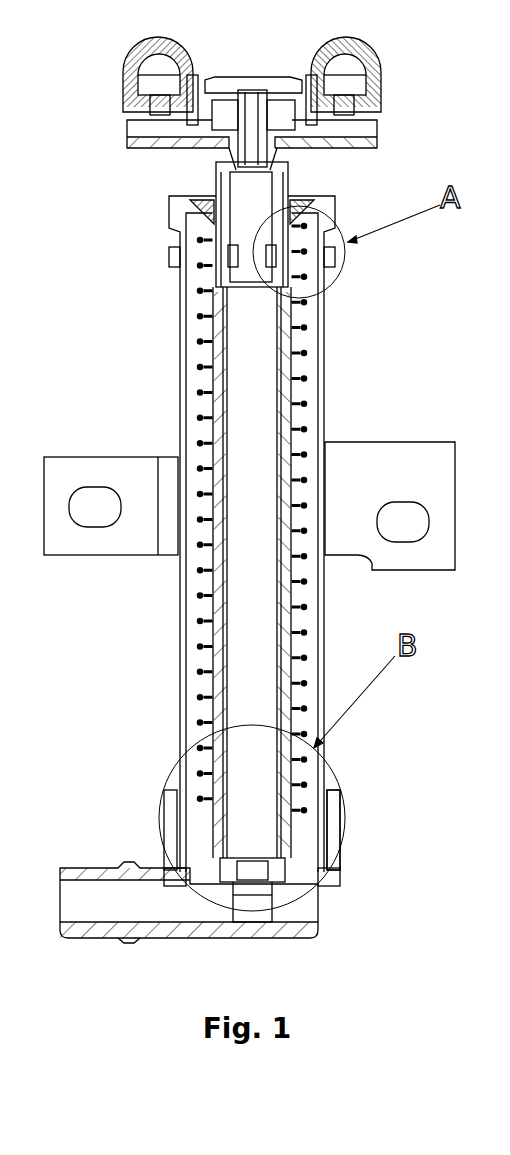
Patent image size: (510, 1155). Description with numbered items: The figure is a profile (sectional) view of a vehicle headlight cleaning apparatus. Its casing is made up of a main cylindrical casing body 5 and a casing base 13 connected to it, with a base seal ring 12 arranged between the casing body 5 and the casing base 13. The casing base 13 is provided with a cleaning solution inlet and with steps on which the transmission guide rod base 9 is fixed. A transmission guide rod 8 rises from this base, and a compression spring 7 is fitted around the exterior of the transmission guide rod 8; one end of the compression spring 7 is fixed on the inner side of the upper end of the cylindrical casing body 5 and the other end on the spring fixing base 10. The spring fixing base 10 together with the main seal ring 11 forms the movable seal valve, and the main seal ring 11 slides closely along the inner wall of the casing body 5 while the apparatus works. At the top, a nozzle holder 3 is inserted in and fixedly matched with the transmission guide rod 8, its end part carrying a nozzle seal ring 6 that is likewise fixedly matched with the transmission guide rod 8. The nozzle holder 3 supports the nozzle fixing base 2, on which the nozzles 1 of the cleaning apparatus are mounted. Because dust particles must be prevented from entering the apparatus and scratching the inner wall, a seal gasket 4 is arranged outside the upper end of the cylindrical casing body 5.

The nozzle 1 is at (150, 83).
The nozzle fixing base 2 is at (130, 118).
The nozzle holder 3 is at (223, 153).
The seal gasket 4 is at (173, 205).
The cylinder casing body 5 is at (183, 320).
The nozzle seal ring 6 is at (180, 222).
The compression spring 7 is at (196, 373).
The transmission guide rod 8 is at (187, 603).
The transmission guide rod base 9 is at (295, 878).
The spring fixing base 10 is at (305, 805).
The main seal ring 11 is at (322, 845).
The base seal ring 12 is at (172, 873).
The casing base 13 is at (315, 920).